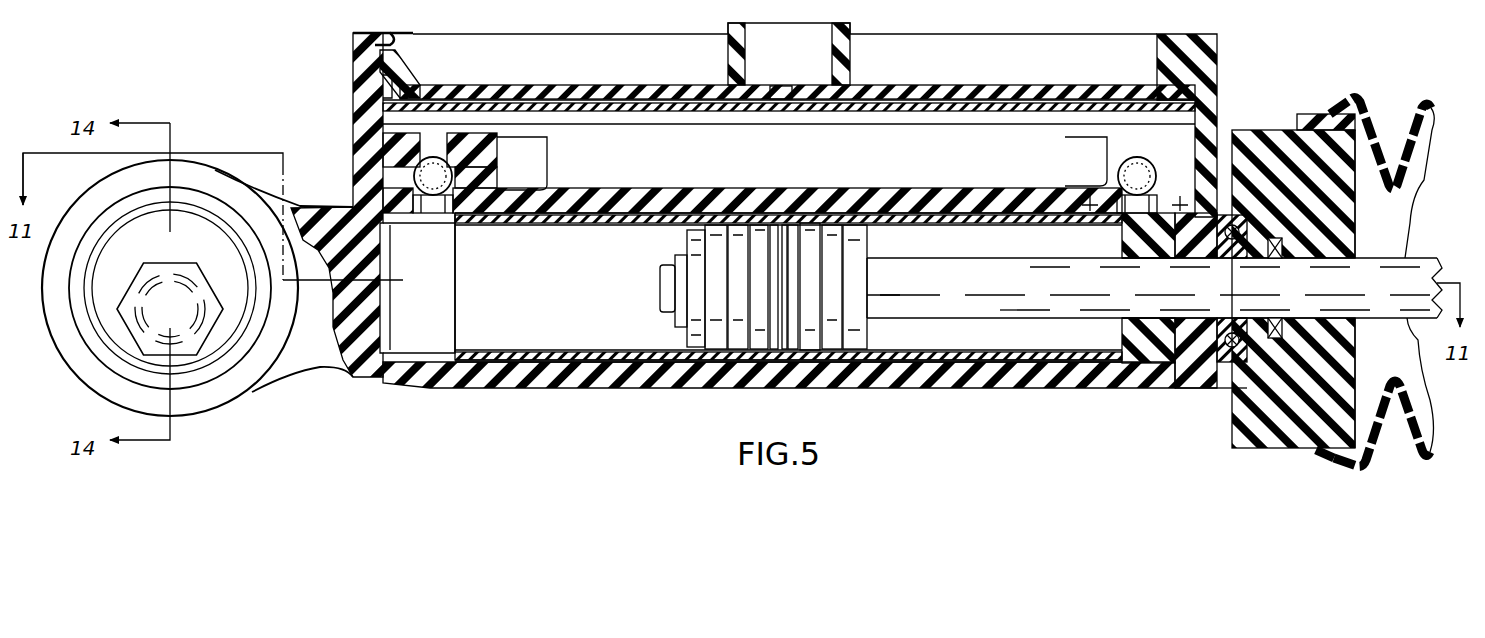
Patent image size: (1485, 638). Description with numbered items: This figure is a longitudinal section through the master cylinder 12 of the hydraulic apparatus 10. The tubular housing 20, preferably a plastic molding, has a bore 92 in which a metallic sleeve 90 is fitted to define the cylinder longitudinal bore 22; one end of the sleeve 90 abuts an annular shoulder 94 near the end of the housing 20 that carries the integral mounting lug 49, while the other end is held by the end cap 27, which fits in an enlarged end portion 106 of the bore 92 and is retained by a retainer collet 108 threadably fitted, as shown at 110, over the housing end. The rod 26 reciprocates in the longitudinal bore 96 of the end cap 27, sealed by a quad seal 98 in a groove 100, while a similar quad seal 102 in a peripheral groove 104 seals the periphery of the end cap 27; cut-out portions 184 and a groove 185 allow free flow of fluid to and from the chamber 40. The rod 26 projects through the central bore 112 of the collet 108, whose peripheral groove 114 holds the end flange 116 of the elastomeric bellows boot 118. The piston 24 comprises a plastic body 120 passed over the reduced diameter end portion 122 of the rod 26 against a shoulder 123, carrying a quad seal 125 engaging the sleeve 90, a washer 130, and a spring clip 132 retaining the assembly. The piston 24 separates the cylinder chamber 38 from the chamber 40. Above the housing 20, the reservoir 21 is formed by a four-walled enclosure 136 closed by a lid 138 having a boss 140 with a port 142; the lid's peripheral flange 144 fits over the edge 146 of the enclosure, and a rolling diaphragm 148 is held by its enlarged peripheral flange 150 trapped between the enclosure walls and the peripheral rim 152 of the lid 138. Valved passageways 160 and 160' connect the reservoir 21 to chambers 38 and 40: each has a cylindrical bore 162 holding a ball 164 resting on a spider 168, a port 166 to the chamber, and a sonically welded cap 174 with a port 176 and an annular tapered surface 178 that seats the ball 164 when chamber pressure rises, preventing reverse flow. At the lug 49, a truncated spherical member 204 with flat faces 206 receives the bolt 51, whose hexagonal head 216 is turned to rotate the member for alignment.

The ball valve assembly 10 is at (1144, 191).
The master cylinder 12 is at (492, 388).
The housing 20 is at (598, 392).
The reservoir 21 is at (924, 82).
The longitudinal bore 22 is at (585, 352).
The piston 24 is at (809, 353).
The push-rod 26 is at (956, 257).
The end cap 27 is at (1214, 372).
The cylinder chamber 38 is at (634, 376).
The cylinder chamber 40 is at (1050, 348).
The mounting lug 49 is at (240, 192).
The bolt 51 is at (190, 292).
The sleeve 90 is at (893, 368).
The housing bore 92 is at (597, 200).
The annular shoulder 94 is at (455, 215).
The longitudinal bore 96 is at (1140, 262).
The quad seal 98 is at (1275, 262).
The groove 100 is at (1273, 318).
The quad seal 102 is at (1245, 250).
The peripheral groove 104 is at (1233, 342).
The enlarged end portion 106 is at (1245, 352).
The retainer collet 108 is at (1240, 132).
The threaded fit 110 is at (1240, 437).
The central bore 112 is at (1318, 318).
The peripheral groove 114 is at (1310, 118).
The end flange 116 is at (1316, 450).
The bellows boot 118 is at (1370, 110).
The piston body 120 is at (866, 273).
The reduced diameter end portion 122 is at (672, 320).
The shoulder 123 is at (866, 303).
The quad seal 125 is at (780, 346).
The washer 130 is at (701, 345).
The spring clip 132 is at (684, 248).
The four-walled enclosure 136 is at (565, 87).
The lid 138 is at (625, 34).
The boss 140 is at (840, 70).
The port 142 is at (795, 86).
The peripheral flange 144 is at (392, 40).
The edge 146 is at (366, 44).
The diaphragm 148 is at (763, 112).
The enlarged peripheral flange 150 is at (380, 82).
The peripheral rim 152 is at (410, 74).
The valved passageway 160 is at (541, 162).
The valved passageway 160' is at (1086, 184).
The cylindrical bore 162 is at (480, 181).
The ball 164 is at (418, 179).
The port 166 is at (433, 215).
The spider 168 is at (1115, 222).
The cap 174 is at (470, 143).
The port 176 is at (396, 141).
The annular tapered surface 178 is at (437, 157).
The cut-out portions 184 is at (1165, 242).
The groove 185 is at (1146, 346).
The truncated spherical member 204 is at (115, 345).
The flat faces 206 is at (232, 310).
The hexagonal head 216 is at (190, 348).